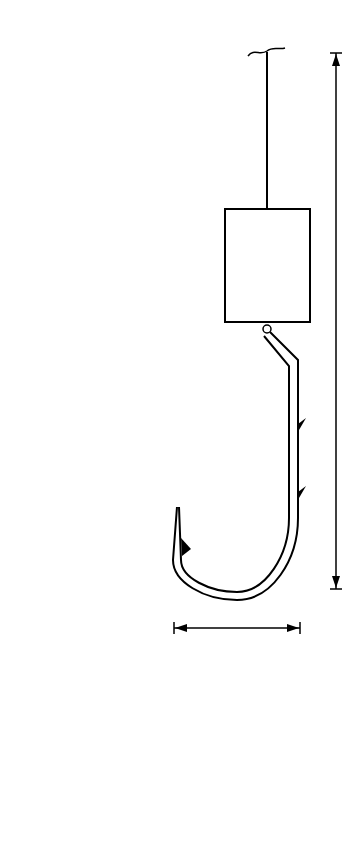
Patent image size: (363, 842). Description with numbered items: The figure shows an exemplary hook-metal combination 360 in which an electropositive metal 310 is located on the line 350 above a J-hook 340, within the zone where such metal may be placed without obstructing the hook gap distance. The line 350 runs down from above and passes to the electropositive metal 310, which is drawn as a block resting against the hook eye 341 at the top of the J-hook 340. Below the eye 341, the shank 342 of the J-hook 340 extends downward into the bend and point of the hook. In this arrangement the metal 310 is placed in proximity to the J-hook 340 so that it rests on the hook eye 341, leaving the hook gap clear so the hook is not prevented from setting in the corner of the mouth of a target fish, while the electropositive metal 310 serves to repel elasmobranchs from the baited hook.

The hook-metal combination 360 is at (144, 86).
The line 350 is at (267, 133).
The electropositive metal 310 is at (225, 265).
The J-hook 340 is at (173, 572).
The hook eye 341 is at (262, 334).
The shank 342 is at (289, 390).